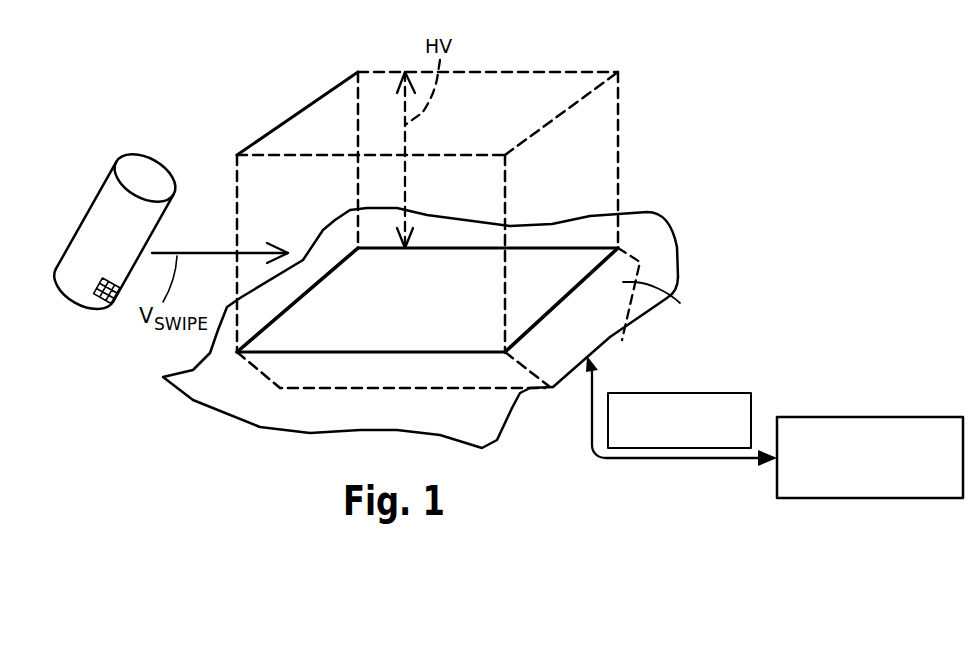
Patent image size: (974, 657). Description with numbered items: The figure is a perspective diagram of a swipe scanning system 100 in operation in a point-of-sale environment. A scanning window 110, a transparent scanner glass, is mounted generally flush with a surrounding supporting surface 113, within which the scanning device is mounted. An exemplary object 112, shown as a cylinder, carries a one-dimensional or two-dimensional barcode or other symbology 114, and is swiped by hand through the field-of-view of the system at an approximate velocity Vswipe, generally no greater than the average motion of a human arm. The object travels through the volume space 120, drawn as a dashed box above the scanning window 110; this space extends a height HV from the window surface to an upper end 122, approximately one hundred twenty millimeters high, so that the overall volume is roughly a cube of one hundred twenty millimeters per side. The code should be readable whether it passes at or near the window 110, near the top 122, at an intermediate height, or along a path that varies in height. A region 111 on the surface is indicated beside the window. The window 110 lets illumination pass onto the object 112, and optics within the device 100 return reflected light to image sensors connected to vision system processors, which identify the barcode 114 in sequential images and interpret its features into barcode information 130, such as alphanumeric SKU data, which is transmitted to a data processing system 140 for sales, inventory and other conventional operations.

The swipe scanning system 100 is at (645, 242).
The scanning window 110 is at (387, 345).
The code region 111 is at (680, 303).
The object 112 is at (133, 152).
The supporting surface 113 is at (665, 272).
The barcode 114 is at (100, 300).
The volume space 120 is at (621, 120).
The upper end 122 is at (486, 71).
The barcode information 130 is at (647, 392).
The data processing system 140 is at (873, 416).